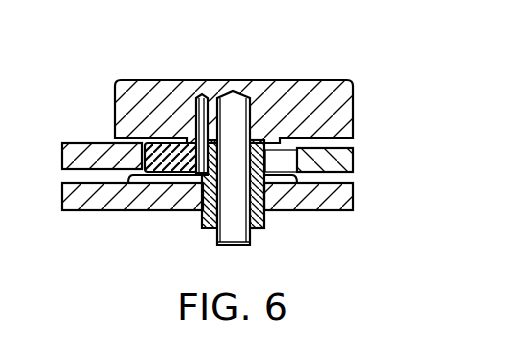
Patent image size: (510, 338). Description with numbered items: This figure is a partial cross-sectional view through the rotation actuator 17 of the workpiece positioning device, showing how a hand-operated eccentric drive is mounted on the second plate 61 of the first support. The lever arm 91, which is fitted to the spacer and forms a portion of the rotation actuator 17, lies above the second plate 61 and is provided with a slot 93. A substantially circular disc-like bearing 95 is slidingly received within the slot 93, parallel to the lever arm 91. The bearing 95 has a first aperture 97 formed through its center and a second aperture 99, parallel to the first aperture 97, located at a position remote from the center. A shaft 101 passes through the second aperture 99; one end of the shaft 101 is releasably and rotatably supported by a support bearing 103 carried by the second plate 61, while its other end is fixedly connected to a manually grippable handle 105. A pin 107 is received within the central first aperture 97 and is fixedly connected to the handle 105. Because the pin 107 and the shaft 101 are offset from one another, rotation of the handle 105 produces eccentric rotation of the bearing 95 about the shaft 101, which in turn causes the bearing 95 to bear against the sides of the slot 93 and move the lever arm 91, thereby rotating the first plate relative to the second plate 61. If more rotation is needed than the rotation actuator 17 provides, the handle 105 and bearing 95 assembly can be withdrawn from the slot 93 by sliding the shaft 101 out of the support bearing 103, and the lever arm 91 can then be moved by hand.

The rotation actuator 17 is at (244, 151).
The second plate 61 is at (355, 200).
The lever arm 91 is at (355, 158).
The slot 93 is at (138, 162).
The disc-like bearing 95 is at (132, 180).
The first aperture 97 is at (192, 154).
The second aperture 99 is at (268, 155).
The shaft 101 is at (240, 246).
The support bearing 103 is at (207, 230).
The handle 105 is at (158, 80).
The pin 107 is at (208, 95).